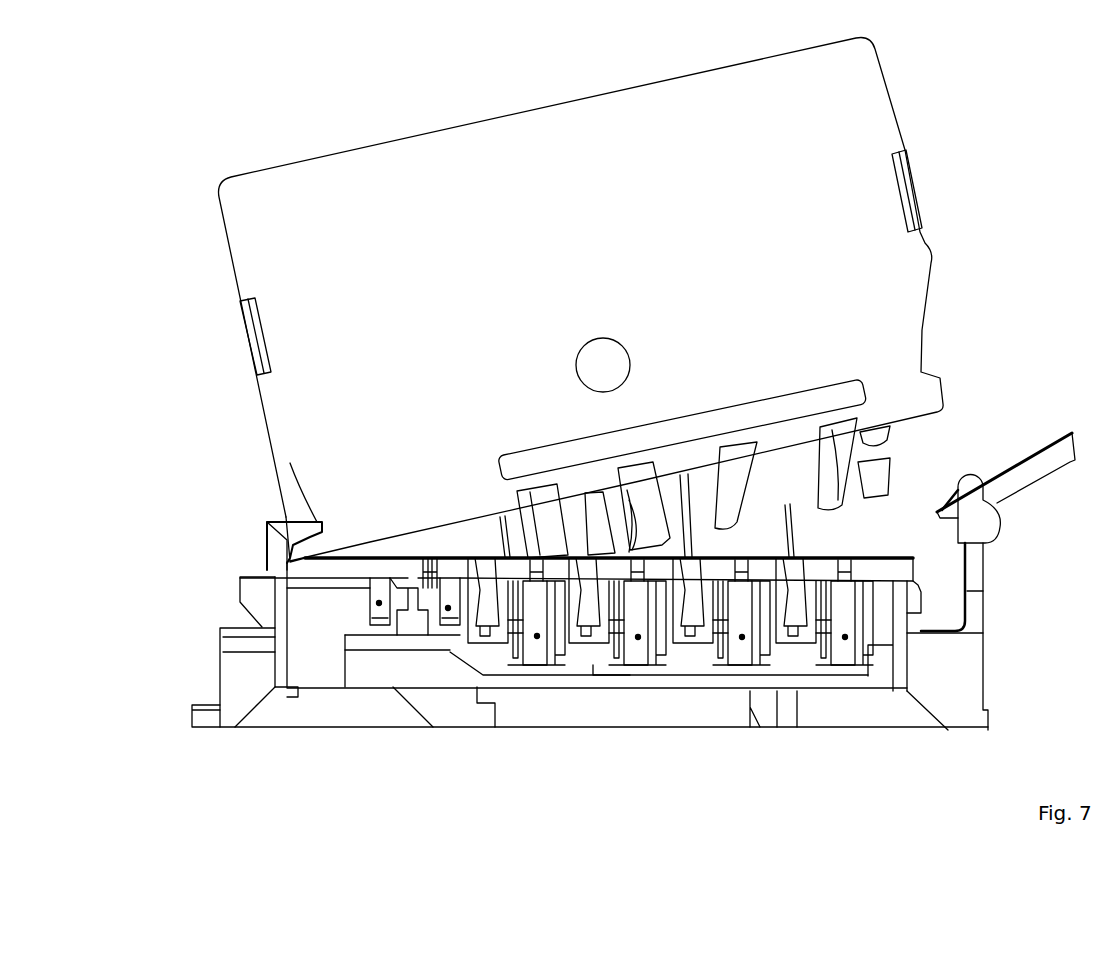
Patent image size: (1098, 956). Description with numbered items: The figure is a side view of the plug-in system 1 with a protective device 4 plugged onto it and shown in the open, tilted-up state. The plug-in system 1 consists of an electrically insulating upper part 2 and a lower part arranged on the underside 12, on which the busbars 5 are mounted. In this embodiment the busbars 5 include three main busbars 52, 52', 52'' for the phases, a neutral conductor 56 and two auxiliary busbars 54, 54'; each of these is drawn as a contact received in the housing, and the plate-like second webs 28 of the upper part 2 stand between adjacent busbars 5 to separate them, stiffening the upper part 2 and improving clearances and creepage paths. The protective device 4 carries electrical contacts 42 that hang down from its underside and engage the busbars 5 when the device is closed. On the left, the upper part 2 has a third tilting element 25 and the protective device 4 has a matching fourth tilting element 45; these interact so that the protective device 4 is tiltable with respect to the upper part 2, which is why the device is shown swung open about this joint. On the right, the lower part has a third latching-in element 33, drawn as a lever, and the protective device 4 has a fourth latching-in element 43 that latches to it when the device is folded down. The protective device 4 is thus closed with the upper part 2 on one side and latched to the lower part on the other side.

The plug-in system 1 is at (215, 588).
The upper part 2 is at (873, 560).
The protective device 4 is at (245, 360).
The busbar 5 is at (609, 685).
The underside 12 is at (620, 688).
The third tilting element 25 is at (300, 527).
The second web 28 is at (665, 657).
The third latching-in element 33 is at (945, 508).
The electrical contact 42 is at (833, 463).
The fourth latching-in element 43 is at (927, 370).
The fourth tilting element 45 is at (285, 517).
The auxiliary busbar 54' is at (379, 666).
The auxiliary busbar 54 is at (447, 667).
The neutral conductor 56 is at (537, 639).
The main busbar 52'' is at (655, 696).
The main busbar 52' is at (749, 692).
The main busbar 52 is at (842, 686).